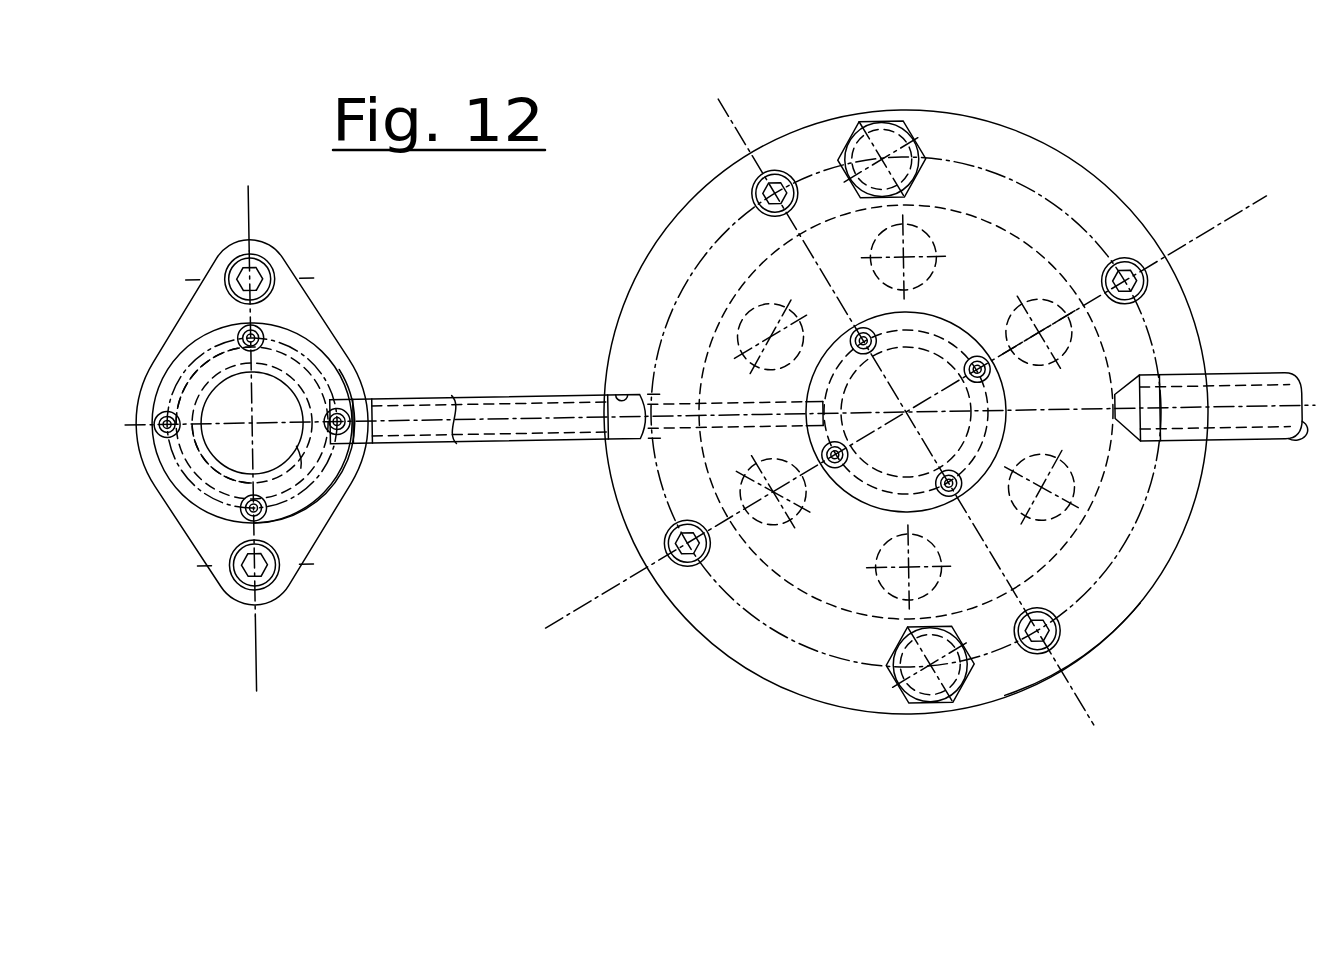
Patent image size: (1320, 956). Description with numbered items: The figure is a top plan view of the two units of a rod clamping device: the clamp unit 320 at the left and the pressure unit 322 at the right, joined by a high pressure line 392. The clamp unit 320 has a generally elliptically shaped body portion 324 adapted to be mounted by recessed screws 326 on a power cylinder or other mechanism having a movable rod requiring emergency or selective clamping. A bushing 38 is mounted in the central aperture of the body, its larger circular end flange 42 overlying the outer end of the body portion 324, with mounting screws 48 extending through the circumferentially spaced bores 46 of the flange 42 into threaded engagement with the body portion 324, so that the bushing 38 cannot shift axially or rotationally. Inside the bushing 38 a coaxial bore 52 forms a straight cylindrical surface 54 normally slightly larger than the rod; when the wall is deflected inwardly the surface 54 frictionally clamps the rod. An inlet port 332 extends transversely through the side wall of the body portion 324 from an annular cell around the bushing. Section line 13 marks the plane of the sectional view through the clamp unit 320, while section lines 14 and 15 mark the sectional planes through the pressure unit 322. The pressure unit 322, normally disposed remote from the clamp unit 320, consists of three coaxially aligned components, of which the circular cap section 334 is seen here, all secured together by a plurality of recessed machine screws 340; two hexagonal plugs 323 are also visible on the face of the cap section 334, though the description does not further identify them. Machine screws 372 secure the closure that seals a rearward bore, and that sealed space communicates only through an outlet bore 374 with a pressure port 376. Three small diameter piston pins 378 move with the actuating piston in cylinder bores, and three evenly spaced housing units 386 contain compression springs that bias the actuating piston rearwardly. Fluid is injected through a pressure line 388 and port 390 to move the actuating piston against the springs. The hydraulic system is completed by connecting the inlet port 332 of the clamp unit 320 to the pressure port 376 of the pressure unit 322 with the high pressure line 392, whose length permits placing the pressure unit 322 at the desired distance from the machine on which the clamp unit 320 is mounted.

The section line 13- 13 is at (347, 212).
The section line 14- 14 is at (568, 490).
The section line 15- 15 is at (1257, 288).
The bushing 38 is at (205, 383).
The circular end flange 42 is at (300, 505).
The bore 46 is at (234, 342).
The mounting screw 48 is at (262, 342).
The bore 52 is at (232, 452).
The cylindrical surface 54 is at (296, 448).
The clamp unit 320 is at (343, 302).
The pressure unit 322 is at (1050, 140).
The hex plug 323 is at (878, 128).
The body portion 324 is at (334, 526).
The recessed screw 326 is at (268, 276).
The inlet port 332 is at (372, 403).
The cap section 334 is at (1137, 607).
The recessed machine screw 340 is at (763, 187).
The machine screw 372 is at (837, 460).
The outlet bore 374 is at (677, 396).
The pressure port 376 is at (643, 390).
The piston pin 378 is at (908, 256).
The housing unit 386 is at (773, 307).
The pressure line 388 is at (1240, 436).
The port 390 is at (1198, 432).
The high pressure line 392 is at (516, 376).